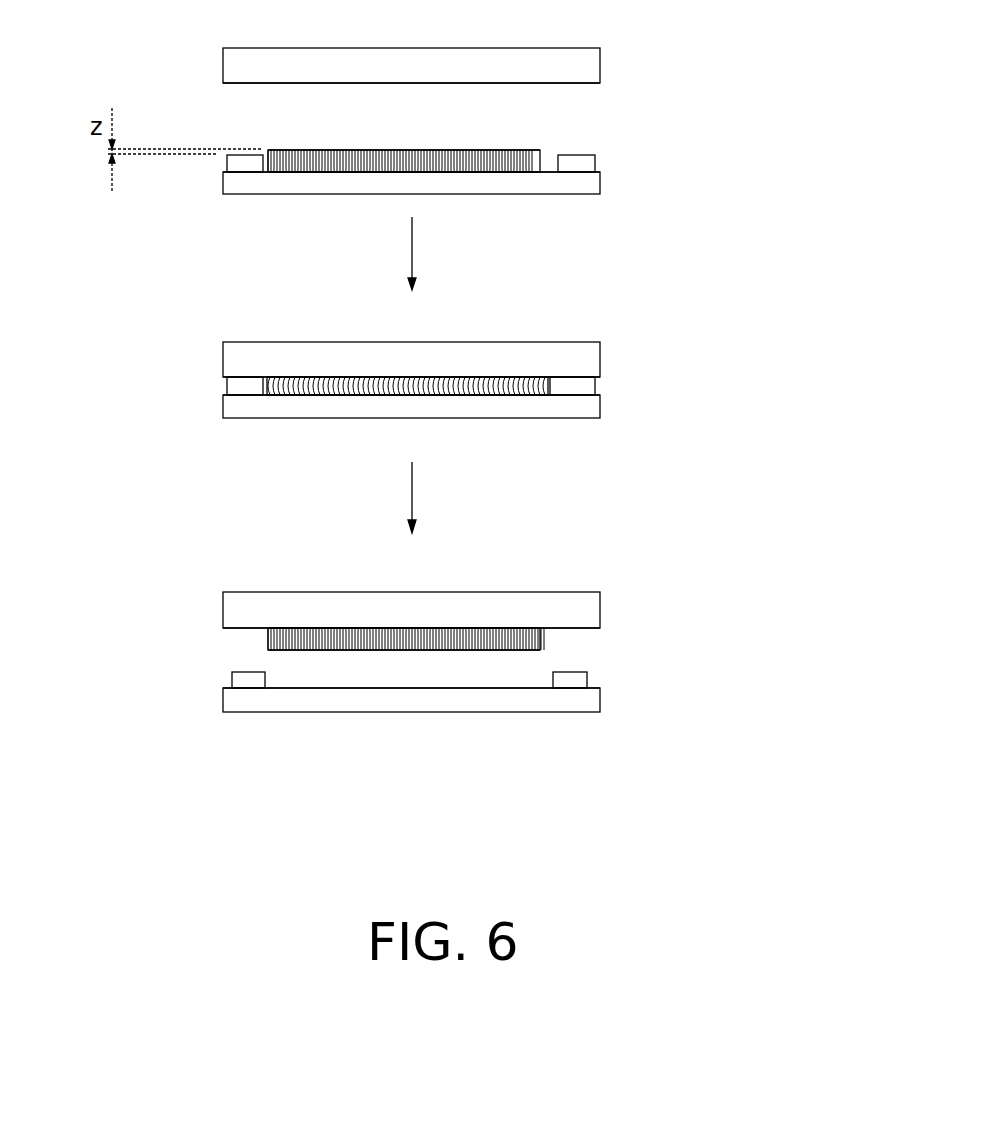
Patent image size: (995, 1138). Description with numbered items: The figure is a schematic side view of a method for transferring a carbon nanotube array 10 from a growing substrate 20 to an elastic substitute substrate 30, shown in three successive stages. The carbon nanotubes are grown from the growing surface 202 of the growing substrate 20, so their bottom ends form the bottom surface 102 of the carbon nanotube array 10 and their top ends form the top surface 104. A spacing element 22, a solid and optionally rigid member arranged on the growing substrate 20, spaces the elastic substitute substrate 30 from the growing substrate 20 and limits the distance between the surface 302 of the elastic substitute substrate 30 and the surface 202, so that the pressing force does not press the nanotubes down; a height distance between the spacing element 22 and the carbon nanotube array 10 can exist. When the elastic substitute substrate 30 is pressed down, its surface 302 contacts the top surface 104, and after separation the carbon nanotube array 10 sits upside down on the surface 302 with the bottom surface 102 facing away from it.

The carbon nanotube array 10 is at (488, 150).
The bottom surface of the carbon nanotube array 102 is at (283, 172).
The top surface of the carbon nanotube array 104 is at (277, 150).
The growing substrate 20 is at (598, 183).
The growing surface of the growing substrate 202 is at (358, 173).
The spacing element 22 is at (590, 160).
The elastic substitute substrate 30 is at (577, 60).
The surface of the elastic substitute substrate 302 is at (247, 84).